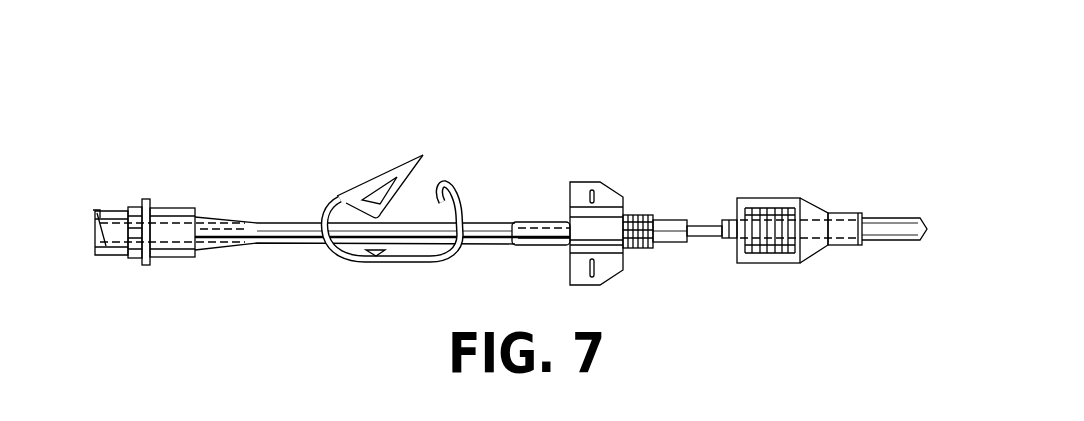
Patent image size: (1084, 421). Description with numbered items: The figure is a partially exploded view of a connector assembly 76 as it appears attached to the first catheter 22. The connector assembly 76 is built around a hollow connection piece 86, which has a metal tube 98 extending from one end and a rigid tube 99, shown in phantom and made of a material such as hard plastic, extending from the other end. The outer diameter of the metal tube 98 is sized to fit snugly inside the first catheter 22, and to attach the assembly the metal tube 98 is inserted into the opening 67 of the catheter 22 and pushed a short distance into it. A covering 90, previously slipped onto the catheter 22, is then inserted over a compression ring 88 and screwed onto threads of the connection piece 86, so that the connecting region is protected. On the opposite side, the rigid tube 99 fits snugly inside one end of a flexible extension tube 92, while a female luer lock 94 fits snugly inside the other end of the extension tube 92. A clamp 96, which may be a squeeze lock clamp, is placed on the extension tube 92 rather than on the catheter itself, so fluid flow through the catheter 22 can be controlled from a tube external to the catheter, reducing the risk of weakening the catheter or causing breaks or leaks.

The first catheter 22 is at (892, 220).
The opening 67 is at (727, 240).
The connector assembly 76 is at (378, 197).
The hollow connection piece 86 is at (588, 182).
The compression ring 88 is at (672, 215).
The covering 90 is at (767, 264).
The flexible extension tube 92 is at (287, 223).
The female luer lock 94 is at (138, 262).
The clamp 96 is at (342, 250).
The metal tube 98 is at (705, 225).
The rigid tube 99 is at (537, 245).